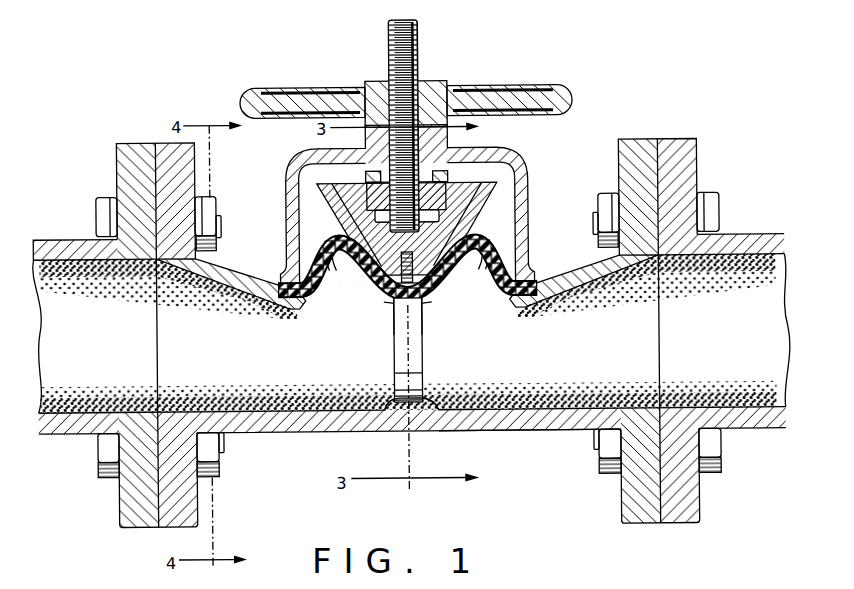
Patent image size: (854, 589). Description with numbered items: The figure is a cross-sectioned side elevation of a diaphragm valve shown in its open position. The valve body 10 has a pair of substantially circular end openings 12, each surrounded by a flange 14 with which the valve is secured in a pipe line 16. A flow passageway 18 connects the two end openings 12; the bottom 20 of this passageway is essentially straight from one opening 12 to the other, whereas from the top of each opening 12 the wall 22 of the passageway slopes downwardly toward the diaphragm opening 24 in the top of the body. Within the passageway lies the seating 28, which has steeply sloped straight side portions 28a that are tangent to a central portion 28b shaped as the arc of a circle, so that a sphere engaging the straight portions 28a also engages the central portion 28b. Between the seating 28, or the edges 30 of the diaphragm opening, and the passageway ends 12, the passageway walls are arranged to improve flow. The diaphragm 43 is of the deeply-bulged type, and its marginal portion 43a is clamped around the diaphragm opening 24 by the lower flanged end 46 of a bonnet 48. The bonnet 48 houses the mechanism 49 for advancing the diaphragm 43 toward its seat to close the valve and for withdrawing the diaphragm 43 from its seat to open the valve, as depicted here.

The valve body 10 is at (486, 444).
The end openings 12 is at (157, 337).
The flanges 14 is at (161, 165).
The pipe line 16 is at (59, 241).
The flow passageway 18 is at (308, 362).
The bottom of the passageway 20 is at (348, 407).
The passageway top wall 22 is at (222, 291).
The diaphragm opening 24 is at (489, 247).
The seating 28 is at (428, 348).
The straight portions of the seating 28a is at (413, 332).
The central portion of the seating 28b is at (428, 403).
The edges of the diaphragm opening 30 is at (531, 311).
The diaphragm 43 is at (381, 305).
The marginal portion of the diaphragm 43a is at (281, 285).
The lower flanged end of the bonnet 46 is at (340, 258).
The bonnet 48 is at (524, 184).
The mechanism 49 is at (482, 170).